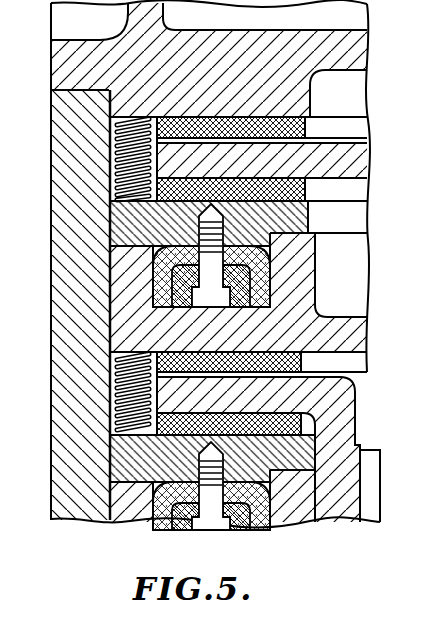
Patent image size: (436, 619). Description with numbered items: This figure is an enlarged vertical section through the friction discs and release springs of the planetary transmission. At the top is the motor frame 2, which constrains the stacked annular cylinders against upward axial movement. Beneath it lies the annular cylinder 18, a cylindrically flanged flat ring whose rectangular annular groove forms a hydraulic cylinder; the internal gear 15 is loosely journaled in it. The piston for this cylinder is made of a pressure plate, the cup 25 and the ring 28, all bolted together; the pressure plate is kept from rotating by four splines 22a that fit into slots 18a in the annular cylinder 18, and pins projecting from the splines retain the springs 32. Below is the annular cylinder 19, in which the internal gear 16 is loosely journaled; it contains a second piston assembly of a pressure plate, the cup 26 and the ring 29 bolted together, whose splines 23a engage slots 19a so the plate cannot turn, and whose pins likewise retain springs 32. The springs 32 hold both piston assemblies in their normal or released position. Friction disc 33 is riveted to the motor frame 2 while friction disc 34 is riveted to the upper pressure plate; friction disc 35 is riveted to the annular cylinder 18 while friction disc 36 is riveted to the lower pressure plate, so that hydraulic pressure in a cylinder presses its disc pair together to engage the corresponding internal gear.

The motor frame 2 is at (93, 39).
The internal gear 15 is at (346, 172).
The internal gear 16 is at (351, 400).
The annular cylinder 18 is at (312, 283).
The slots 18a is at (112, 142).
The annular cylinder 19 is at (291, 530).
The slots 19a is at (112, 363).
The splines 22a is at (122, 229).
The splines 23a is at (125, 463).
The cup 25 is at (160, 283).
The cup 26 is at (155, 525).
The ring 28 is at (112, 313).
The ring 29 is at (243, 529).
The springs 32 is at (114, 173).
The friction disc 33 is at (311, 130).
The friction disc 34 is at (302, 193).
The friction disc 35 is at (312, 363).
The friction disc 36 is at (318, 427).